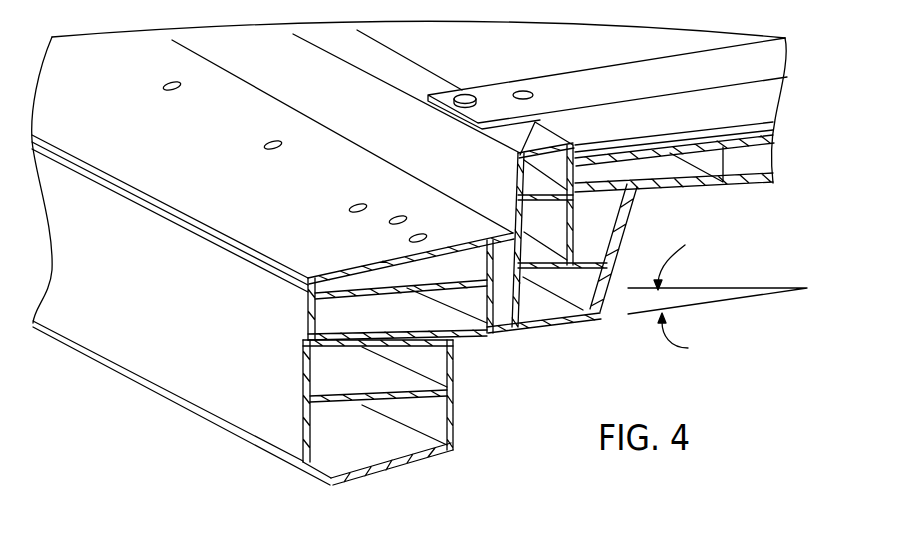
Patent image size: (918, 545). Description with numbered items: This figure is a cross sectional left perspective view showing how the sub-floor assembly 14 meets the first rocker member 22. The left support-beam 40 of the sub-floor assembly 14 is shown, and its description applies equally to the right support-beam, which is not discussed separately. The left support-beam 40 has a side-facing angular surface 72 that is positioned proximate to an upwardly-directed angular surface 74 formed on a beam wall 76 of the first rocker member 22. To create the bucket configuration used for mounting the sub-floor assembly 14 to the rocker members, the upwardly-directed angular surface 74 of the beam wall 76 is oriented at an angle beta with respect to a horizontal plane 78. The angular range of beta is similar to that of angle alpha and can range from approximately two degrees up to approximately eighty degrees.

The first rocker member 22 is at (217, 362).
The sub-floor assembly 14 is at (710, 167).
The upwardly-directed angular surface 74 is at (422, 326).
The beam wall 76 is at (399, 352).
The side-facing angular surface 72 is at (349, 352).
The left support-beam 40 is at (562, 319).
The horizontal plane 78 is at (702, 304).